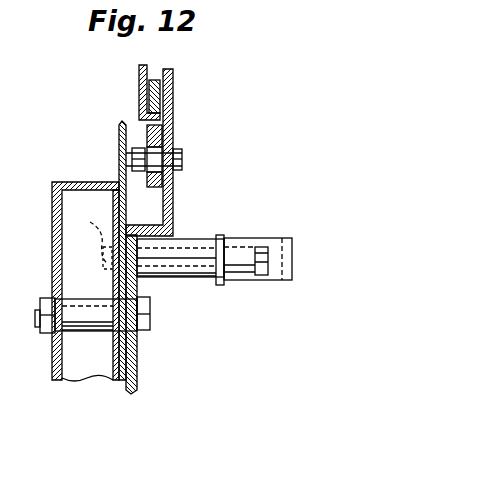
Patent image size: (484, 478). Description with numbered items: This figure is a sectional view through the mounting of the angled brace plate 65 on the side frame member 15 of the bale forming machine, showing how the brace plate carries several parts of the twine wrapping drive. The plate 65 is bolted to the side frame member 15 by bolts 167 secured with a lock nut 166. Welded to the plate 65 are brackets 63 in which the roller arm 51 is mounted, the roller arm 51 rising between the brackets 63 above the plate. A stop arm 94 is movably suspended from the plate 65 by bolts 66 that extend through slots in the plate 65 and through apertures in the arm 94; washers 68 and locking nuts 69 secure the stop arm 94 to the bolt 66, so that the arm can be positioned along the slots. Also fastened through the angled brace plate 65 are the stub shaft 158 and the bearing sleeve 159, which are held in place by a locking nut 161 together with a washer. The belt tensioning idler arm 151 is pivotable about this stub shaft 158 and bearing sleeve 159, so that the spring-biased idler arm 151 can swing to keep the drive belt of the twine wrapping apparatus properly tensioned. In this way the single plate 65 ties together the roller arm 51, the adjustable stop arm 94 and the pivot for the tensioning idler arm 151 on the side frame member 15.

The side frame member 15 is at (132, 367).
The roller arm 51 is at (153, 80).
The brackets 63 is at (139, 78).
The angled brace plate 65 is at (173, 98).
The bolts 66 is at (183, 157).
The washers 68 is at (149, 176).
The locking nuts 69 is at (137, 151).
The stop arm 94 is at (165, 127).
The tensioning idler arm 151 is at (220, 235).
The stub shaft 158 is at (85, 281).
The bearing sleeve 159 is at (184, 279).
The locking nut 161 is at (259, 240).
The lock nut 166 is at (45, 333).
The bolts 167 is at (150, 325).